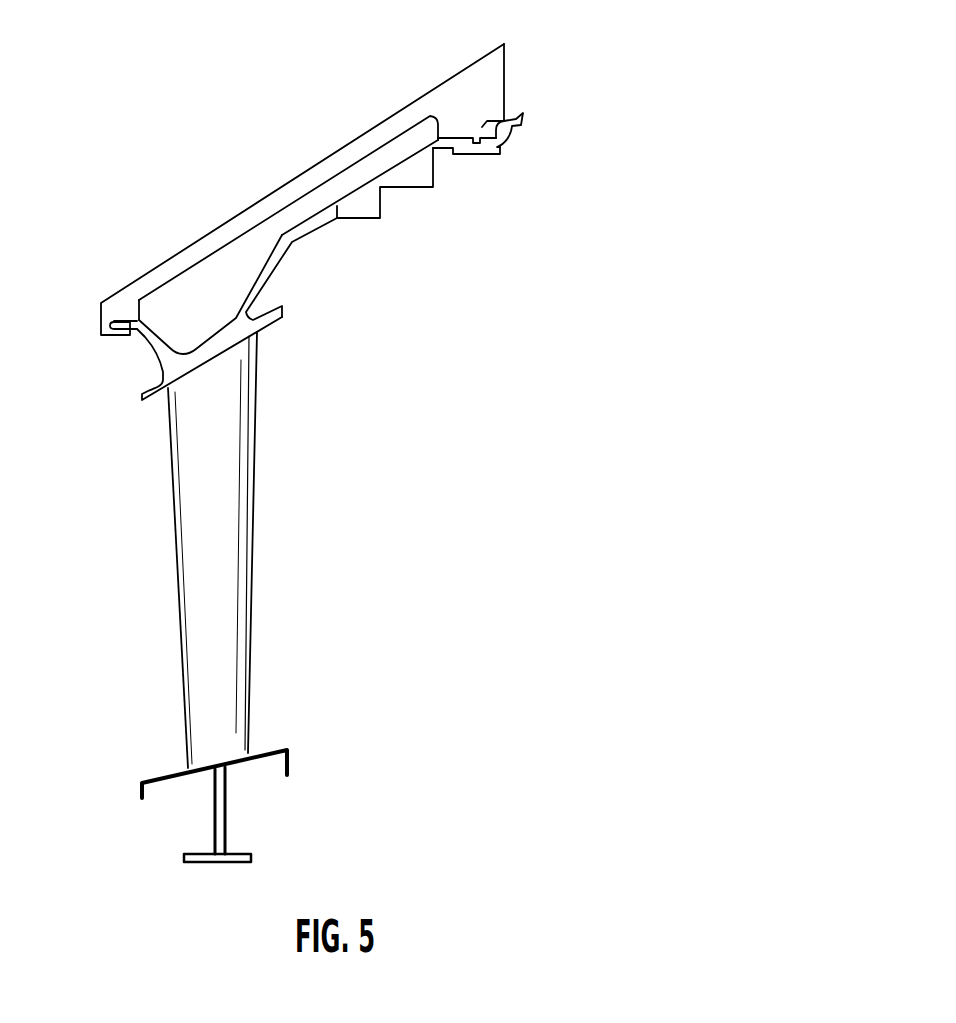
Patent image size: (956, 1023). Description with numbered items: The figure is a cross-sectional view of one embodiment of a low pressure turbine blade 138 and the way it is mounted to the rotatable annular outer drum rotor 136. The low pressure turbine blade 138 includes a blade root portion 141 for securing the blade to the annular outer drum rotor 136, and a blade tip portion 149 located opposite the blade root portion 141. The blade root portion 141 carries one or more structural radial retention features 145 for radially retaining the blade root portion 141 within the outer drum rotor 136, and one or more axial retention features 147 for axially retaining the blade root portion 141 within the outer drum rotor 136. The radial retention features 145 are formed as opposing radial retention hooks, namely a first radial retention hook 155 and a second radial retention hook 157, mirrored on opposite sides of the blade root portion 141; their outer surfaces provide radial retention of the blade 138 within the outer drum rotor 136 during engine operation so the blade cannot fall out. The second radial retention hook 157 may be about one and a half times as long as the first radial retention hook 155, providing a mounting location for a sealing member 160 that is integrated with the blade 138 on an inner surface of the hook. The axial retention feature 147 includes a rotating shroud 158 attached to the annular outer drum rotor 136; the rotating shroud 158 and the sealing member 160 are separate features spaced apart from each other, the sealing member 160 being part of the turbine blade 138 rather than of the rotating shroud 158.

The annular outer drum rotor 136 is at (333, 148).
The low pressure turbine blade 138 is at (338, 527).
The blade root portion 141 is at (143, 364).
The structural radial retention feature 145 is at (277, 268).
The axial retention feature 147 is at (495, 164).
The blade tip portion 149 is at (202, 823).
The first radial retention hook 155 is at (128, 320).
The second radial retention hook 157 is at (455, 139).
The rotating shroud 158 is at (513, 129).
The sealing member 160 is at (406, 203).